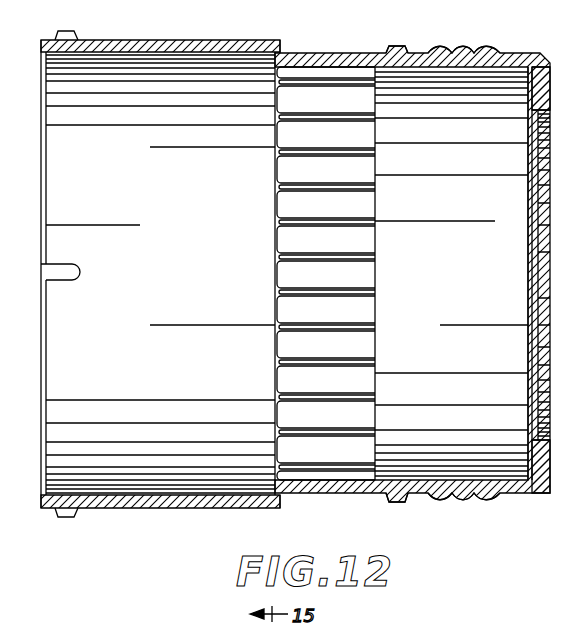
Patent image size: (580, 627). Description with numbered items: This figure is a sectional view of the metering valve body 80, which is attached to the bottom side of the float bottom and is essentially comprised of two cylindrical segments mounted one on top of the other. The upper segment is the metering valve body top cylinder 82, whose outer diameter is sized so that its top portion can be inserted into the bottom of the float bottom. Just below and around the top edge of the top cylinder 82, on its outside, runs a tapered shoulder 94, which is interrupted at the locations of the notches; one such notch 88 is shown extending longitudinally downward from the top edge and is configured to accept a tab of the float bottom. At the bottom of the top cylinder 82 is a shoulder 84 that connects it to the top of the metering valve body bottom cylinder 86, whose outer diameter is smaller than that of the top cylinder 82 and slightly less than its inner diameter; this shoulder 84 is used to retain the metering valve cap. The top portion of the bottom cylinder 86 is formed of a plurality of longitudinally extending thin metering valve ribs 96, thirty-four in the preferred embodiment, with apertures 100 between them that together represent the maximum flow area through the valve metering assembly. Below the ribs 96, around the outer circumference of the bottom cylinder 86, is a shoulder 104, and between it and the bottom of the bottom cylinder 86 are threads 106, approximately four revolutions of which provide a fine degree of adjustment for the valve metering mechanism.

The metering valve body 80 is at (466, 24).
The metering valve body top cylinder 82 is at (250, 19).
The shoulder 84 is at (288, 50).
The metering valve body bottom cylinder 86 is at (348, 54).
The notch 88 is at (52, 275).
The tapered shoulder 94 is at (68, 31).
The thin metering valve ribs 96 is at (351, 440).
The apertures 100 is at (312, 410).
The shoulder 104 is at (398, 47).
The threads 106 is at (463, 48).